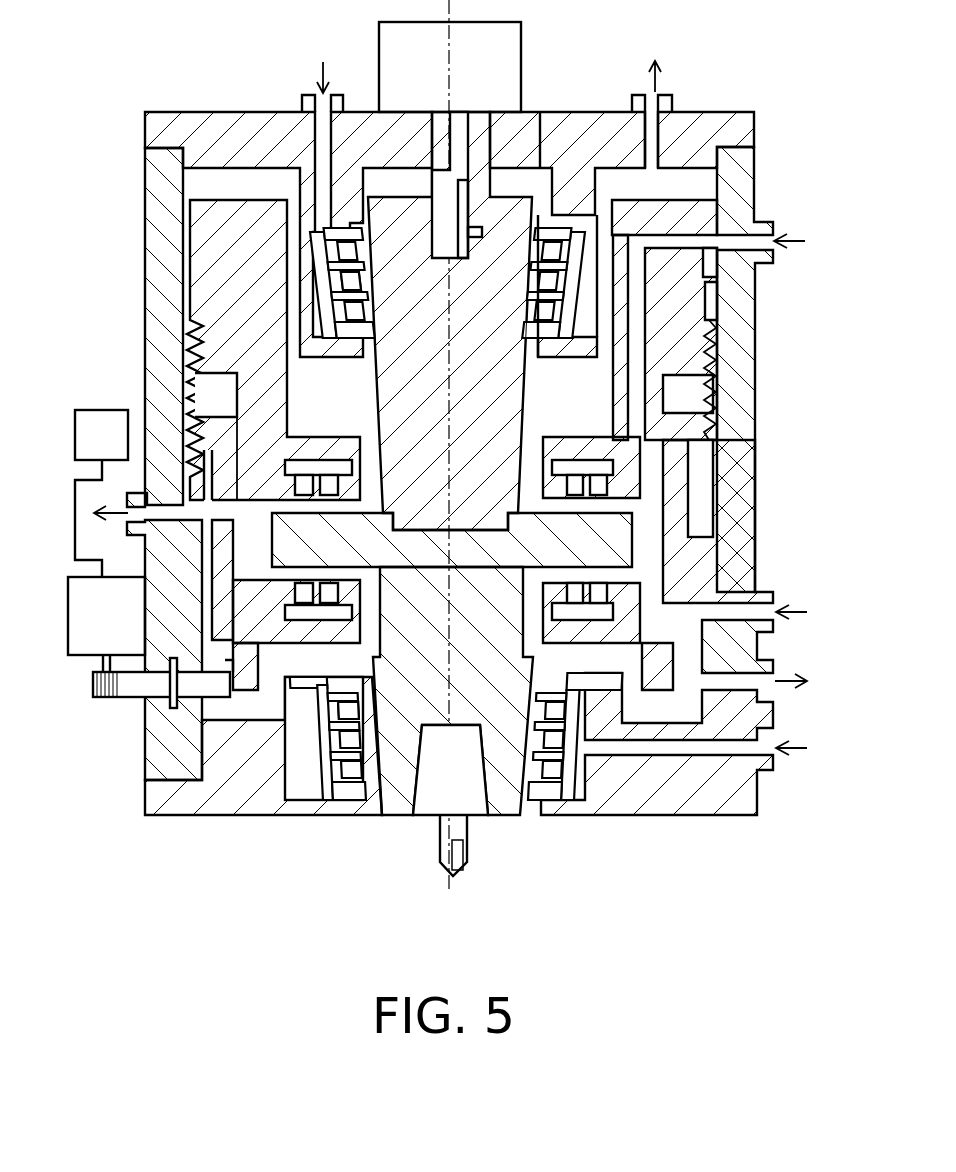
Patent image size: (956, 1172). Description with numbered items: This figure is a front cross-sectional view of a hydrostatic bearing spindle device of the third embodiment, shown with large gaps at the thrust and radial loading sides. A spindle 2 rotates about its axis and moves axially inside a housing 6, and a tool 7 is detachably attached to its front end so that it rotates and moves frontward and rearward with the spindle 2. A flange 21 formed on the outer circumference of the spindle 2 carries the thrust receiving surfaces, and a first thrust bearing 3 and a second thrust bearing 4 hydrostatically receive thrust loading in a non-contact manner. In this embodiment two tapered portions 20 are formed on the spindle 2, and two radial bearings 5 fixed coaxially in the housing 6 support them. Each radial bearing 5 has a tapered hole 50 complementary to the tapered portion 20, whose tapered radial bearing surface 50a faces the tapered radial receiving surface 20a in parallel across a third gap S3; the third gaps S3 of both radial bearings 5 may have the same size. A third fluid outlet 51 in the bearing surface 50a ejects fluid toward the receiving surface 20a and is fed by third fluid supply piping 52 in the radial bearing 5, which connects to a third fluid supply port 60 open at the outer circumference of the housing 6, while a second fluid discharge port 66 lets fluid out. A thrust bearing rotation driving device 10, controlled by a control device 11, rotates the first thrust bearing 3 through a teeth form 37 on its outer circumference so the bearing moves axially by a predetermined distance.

The spindle 2 is at (495, 797).
The first thrust bearing 3 is at (673, 590).
The second thrust bearing 4 is at (263, 310).
The radial bearing 5 is at (247, 800).
The housing 6 is at (162, 208).
The tool 7 is at (462, 792).
The thrust bearing rotation driving device 10 is at (82, 650).
The control device 11 is at (100, 420).
The tapered portion 20 is at (527, 327).
The tapered radial receiving surface 20a is at (533, 305).
The flange 21 is at (607, 537).
The teeth form 37 is at (233, 670).
The tapered hole 50 is at (360, 305).
The tapered radial bearing surface 50a is at (357, 282).
The third fluid outlet 51 is at (552, 295).
The third fluid supply piping 52 is at (325, 163).
The third fluid supply port 60 is at (323, 117).
The second fluid discharge port 66 is at (653, 115).
The third gap S3 is at (372, 342).